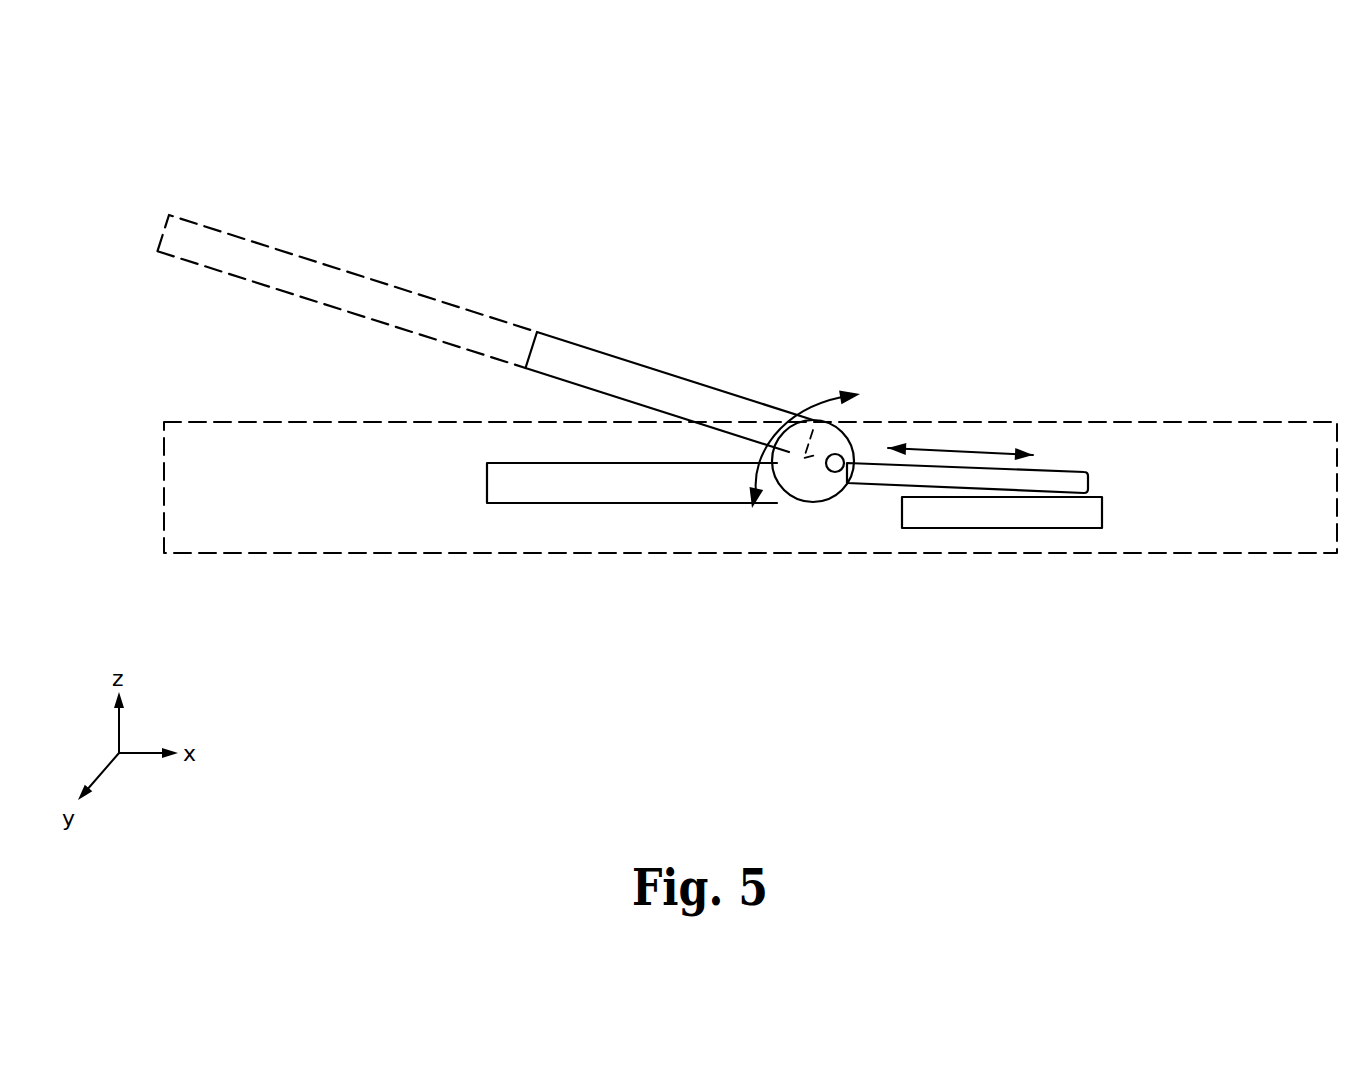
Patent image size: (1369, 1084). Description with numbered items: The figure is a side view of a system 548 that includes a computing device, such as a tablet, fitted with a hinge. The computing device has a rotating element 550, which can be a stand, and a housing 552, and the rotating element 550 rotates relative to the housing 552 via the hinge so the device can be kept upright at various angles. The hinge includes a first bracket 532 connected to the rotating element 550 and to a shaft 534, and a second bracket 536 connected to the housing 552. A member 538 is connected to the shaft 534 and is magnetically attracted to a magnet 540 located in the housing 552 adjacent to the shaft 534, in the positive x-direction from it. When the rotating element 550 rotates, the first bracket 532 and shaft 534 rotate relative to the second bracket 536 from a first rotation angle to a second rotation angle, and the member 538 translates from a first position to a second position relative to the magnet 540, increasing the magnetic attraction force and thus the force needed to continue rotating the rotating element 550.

The system 548 is at (292, 118).
The rotating element 550 is at (392, 288).
The first bracket 532 is at (698, 390).
The shaft 534 is at (838, 440).
The second bracket 536 is at (623, 488).
The member 538 is at (873, 475).
The magnet 540 is at (1022, 515).
The housing 552 is at (343, 555).